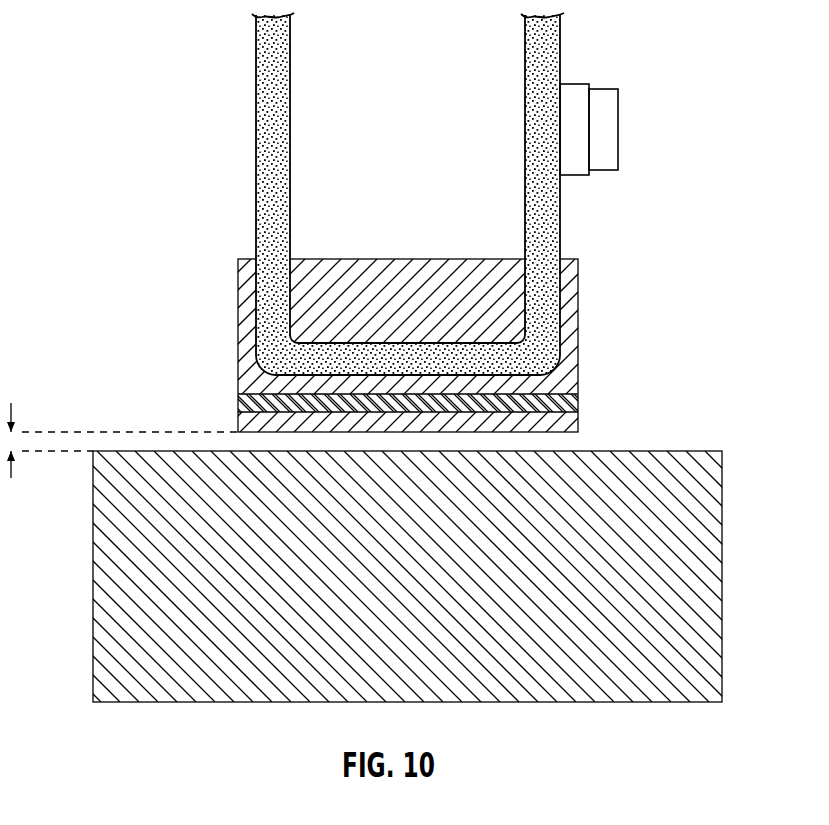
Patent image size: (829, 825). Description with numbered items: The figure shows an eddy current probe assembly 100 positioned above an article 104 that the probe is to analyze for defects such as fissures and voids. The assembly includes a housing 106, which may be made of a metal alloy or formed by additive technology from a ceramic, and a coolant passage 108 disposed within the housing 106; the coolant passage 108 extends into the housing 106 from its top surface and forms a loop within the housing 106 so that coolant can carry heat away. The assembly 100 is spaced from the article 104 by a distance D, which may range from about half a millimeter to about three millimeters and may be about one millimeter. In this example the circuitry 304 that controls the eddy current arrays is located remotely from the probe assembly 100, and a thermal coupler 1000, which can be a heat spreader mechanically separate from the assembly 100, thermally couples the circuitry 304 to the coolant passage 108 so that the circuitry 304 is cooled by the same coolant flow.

The eddy current probe assembly 100 is at (407, 222).
The article 104 is at (711, 559).
The housing 106 is at (472, 278).
The coolant passage 108 is at (562, 207).
The circuitry 304 is at (610, 135).
The thermal coupler 1000 is at (573, 90).
The distance D is at (11, 413).